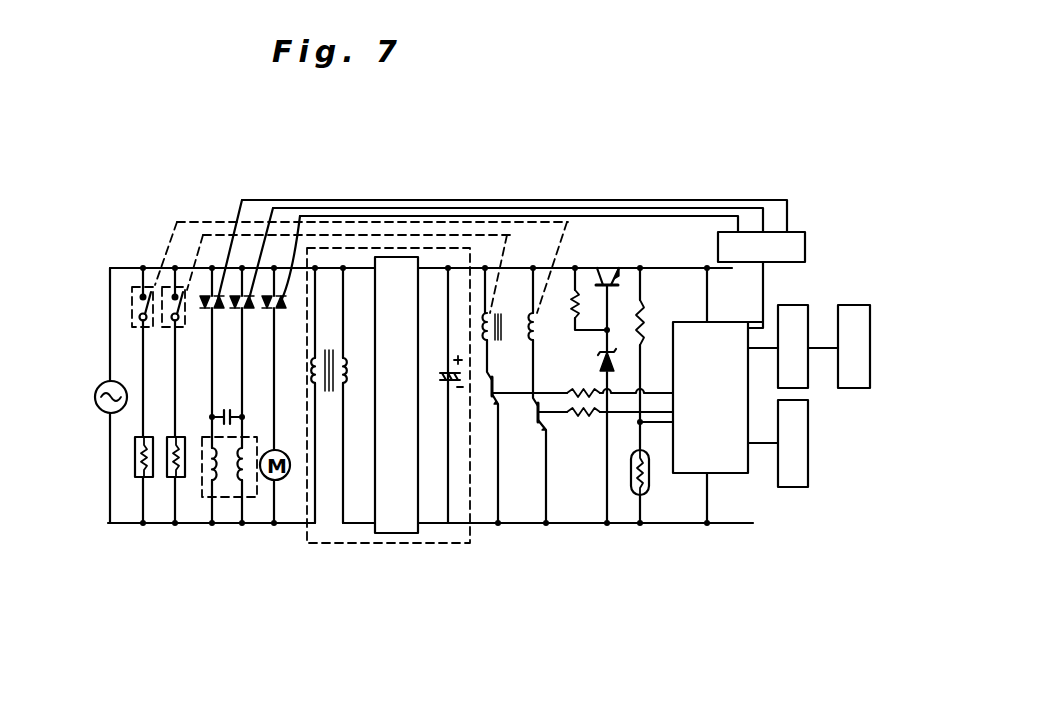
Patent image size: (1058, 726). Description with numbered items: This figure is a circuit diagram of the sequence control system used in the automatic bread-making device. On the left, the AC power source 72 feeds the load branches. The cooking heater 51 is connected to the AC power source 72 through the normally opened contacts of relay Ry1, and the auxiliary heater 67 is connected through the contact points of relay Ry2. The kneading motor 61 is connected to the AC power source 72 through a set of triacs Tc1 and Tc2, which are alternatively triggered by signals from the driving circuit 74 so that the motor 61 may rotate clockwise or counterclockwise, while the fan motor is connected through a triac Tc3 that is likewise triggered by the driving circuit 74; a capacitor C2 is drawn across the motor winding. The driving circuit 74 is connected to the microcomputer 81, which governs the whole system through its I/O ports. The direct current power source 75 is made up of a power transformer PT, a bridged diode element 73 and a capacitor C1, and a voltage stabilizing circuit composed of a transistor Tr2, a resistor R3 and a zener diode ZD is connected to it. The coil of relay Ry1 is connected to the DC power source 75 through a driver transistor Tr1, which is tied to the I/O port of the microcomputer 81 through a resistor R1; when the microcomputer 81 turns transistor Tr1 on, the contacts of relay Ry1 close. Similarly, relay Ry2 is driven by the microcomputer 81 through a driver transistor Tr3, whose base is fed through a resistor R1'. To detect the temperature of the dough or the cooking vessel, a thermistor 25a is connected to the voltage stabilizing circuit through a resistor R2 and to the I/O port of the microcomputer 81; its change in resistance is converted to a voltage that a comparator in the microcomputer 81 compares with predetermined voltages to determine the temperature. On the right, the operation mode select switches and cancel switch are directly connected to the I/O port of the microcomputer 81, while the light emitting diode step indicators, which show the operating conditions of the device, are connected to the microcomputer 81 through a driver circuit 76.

The AC power source 72 is at (103, 381).
The auxiliary heater 67 is at (137, 477).
The cooking heater 51 is at (168, 477).
The kneading motor 61 is at (228, 500).
The triac Tc1 is at (205, 308).
The triac Tc2 is at (214, 300).
The triac Tc3 is at (285, 300).
The capacitor C2 is at (228, 410).
The bridged diode element 73 is at (389, 513).
The power transformer PT is at (329, 359).
The direct current power source 75 is at (405, 535).
The capacitor C1 is at (440, 371).
The relay Ry1 is at (484, 326).
The relay Ry2 is at (531, 314).
The driver transistor Tr1 is at (497, 410).
The transistor Tr2 is at (614, 280).
The driver transistor Tr3 is at (547, 428).
The resistor R1 is at (581, 382).
The resistor R1' is at (581, 426).
The resistor R2 is at (643, 333).
The resistor R3 is at (589, 305).
The zener diode ZD is at (597, 358).
The thermistor 25a is at (647, 489).
The microcomputer 81 is at (723, 322).
The driving circuit 74 is at (801, 232).
The driver circuit 76 is at (797, 305).